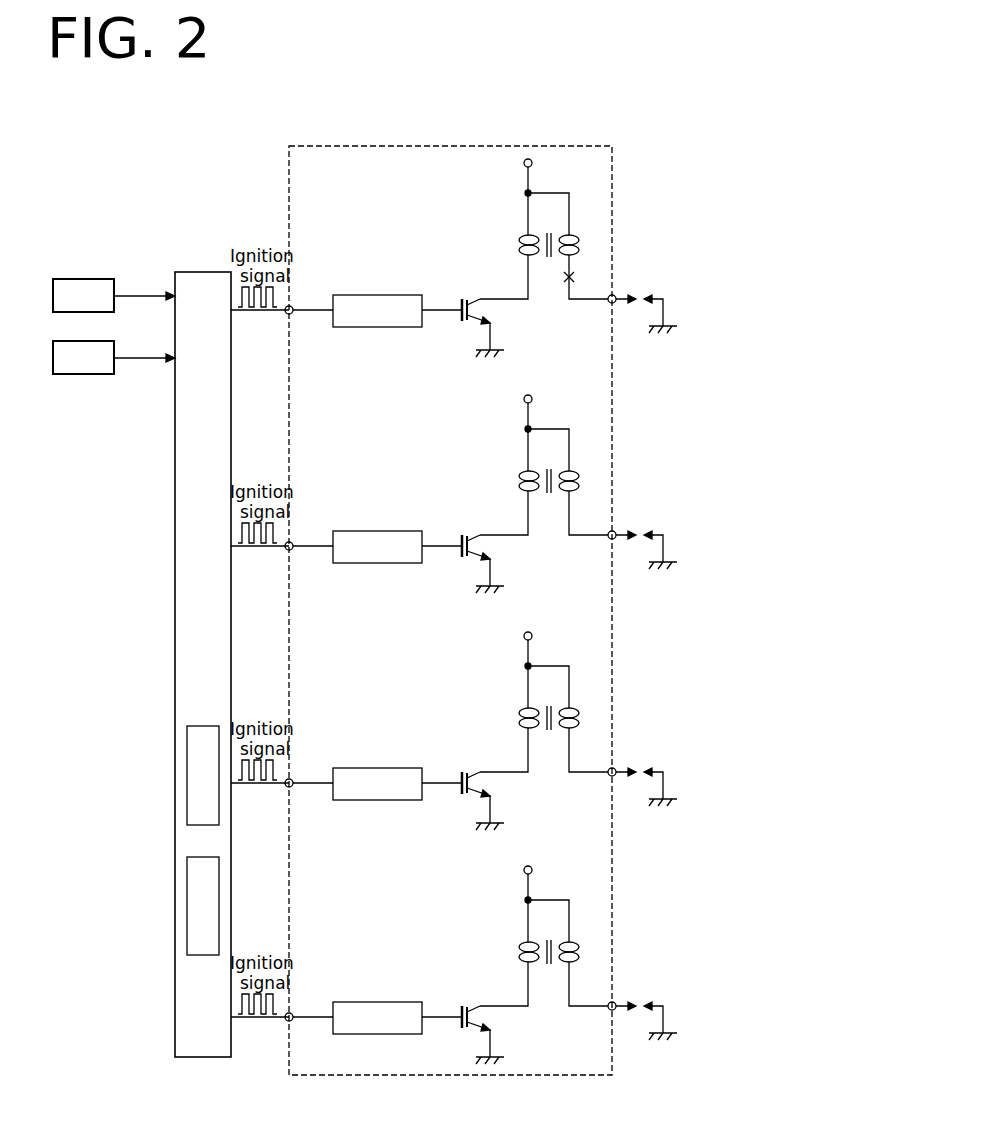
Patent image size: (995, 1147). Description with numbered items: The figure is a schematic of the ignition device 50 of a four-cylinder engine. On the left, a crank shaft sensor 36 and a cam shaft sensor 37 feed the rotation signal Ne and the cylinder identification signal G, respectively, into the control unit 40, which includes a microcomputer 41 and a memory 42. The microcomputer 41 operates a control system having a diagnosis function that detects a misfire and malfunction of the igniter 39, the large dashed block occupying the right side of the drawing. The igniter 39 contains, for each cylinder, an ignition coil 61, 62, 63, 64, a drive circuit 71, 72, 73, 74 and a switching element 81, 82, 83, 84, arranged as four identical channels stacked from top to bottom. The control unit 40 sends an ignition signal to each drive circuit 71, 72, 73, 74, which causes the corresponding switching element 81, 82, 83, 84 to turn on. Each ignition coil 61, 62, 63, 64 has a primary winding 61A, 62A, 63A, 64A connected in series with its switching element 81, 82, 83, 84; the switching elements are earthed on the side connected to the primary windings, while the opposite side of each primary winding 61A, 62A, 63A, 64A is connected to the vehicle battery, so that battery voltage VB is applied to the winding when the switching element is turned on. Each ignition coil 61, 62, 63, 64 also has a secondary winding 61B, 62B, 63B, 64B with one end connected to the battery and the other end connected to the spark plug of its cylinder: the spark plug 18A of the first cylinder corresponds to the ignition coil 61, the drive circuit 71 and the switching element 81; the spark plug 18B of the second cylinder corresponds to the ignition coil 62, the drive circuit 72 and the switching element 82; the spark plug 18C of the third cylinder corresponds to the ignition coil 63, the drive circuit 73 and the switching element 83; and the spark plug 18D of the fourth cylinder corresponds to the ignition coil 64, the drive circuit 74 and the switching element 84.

The crank shaft sensor 36 is at (86, 279).
The cam shaft sensor 37 is at (86, 349).
The igniter 39 is at (508, 146).
The control unit 40 is at (200, 272).
The microcomputer 41 is at (187, 767).
The memory 42 is at (187, 896).
The ignition device 50 is at (170, 188).
The ignition coil 61 is at (539, 226).
The primary winding 61A is at (518, 253).
The secondary winding 61B is at (579, 245).
The ignition coil 62 is at (539, 462).
The primary winding 62A is at (518, 489).
The secondary winding 62B is at (579, 481).
The ignition coil 63 is at (539, 699).
The primary winding 63A is at (518, 726).
The secondary winding 63B is at (579, 718).
The ignition coil 64 is at (539, 933).
The primary winding 64A is at (518, 960).
The secondary winding 64B is at (579, 952).
The drive circuit 71 is at (380, 295).
The drive circuit 72 is at (380, 531).
The drive circuit 73 is at (380, 768).
The drive circuit 74 is at (380, 1002).
The switching element 81 is at (472, 299).
The switching element 82 is at (472, 535).
The switching element 83 is at (472, 772).
The switching element 84 is at (472, 1006).
The spark plug 18A is at (640, 307).
The spark plug 18B is at (640, 543).
The spark plug 18C is at (640, 780).
The spark plug 18D is at (640, 1014).